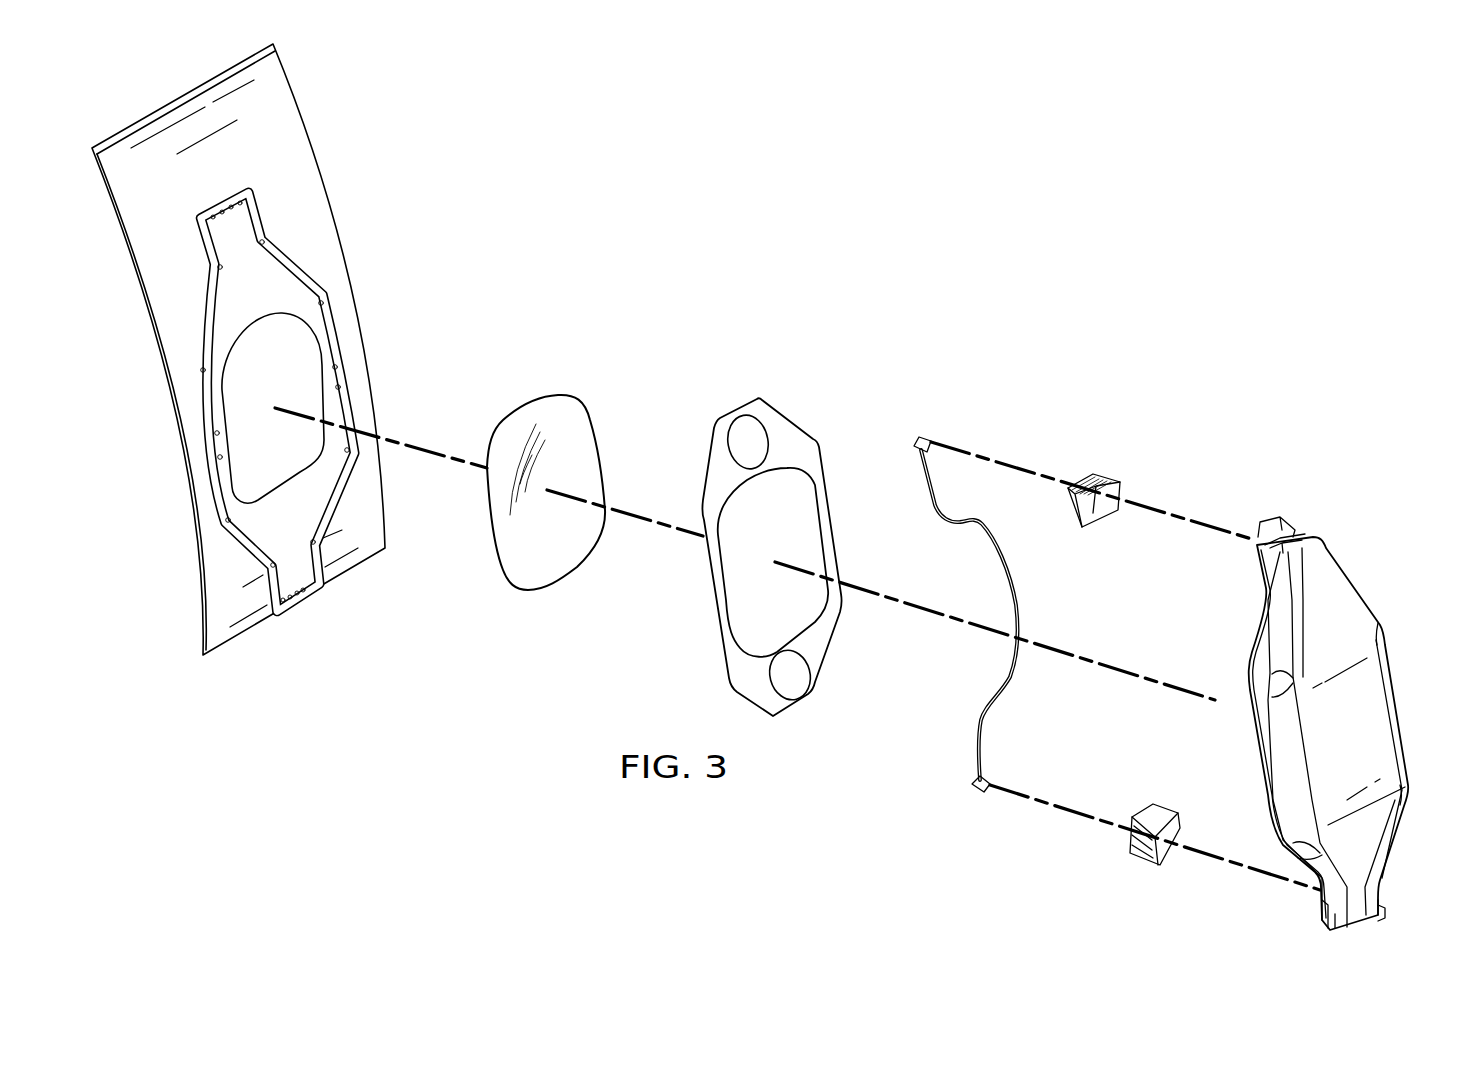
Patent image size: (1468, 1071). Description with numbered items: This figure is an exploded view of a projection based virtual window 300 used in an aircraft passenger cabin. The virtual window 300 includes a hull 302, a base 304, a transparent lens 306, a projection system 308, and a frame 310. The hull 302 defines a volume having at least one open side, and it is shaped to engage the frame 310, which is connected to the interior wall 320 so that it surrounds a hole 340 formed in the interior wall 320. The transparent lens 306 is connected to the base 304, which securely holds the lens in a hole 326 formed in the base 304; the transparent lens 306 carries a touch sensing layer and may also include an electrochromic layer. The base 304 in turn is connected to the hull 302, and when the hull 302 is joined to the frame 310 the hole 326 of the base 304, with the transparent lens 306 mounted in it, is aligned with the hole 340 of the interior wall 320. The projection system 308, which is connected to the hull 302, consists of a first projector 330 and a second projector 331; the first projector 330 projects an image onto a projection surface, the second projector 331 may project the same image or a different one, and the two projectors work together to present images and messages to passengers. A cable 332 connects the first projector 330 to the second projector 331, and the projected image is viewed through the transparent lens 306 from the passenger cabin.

The virtual window 300 is at (883, 207).
The hull 302 is at (1393, 668).
The base 304 is at (832, 517).
The transparent lens 306 is at (530, 402).
The projection system 308 is at (1170, 868).
The frame 310 is at (340, 322).
The interior wall 320 is at (338, 232).
The hole 326 is at (724, 623).
The first projector 330 is at (1142, 862).
The second projector 331 is at (1103, 475).
The cable 332 is at (1017, 582).
The hole 340 is at (214, 433).